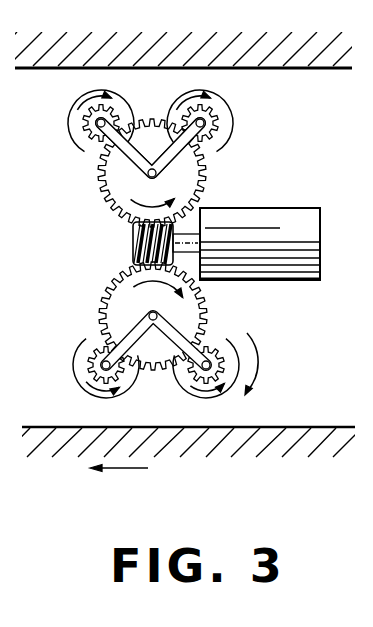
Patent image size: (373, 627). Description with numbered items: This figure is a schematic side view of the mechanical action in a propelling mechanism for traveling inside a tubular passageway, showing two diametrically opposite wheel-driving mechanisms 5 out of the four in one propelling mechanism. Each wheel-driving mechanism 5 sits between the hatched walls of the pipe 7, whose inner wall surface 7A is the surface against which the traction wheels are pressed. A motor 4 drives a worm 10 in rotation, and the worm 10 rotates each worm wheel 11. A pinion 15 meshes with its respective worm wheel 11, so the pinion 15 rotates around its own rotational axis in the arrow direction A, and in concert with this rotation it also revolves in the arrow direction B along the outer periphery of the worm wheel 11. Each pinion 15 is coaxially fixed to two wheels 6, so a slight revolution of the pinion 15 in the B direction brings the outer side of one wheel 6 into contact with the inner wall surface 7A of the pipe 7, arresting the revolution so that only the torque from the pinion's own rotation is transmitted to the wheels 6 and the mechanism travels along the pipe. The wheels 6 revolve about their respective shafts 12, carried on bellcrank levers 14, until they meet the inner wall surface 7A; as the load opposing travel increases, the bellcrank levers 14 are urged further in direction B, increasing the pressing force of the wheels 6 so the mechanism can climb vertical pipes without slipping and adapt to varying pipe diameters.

The motor 4 is at (297, 262).
The wheel-driving mechanism 5 is at (163, 97).
The wheel 6 is at (72, 141).
The pipe 7 is at (322, 409).
The inner wall surface 7A is at (255, 427).
The worm 10 is at (133, 249).
The worm wheel 11 is at (118, 211).
The shaft 12 is at (103, 175).
The bellcrank lever 14 is at (186, 164).
The pinion 15 is at (86, 116).
The arrow direction A is at (100, 392).
The arrow direction B is at (257, 373).